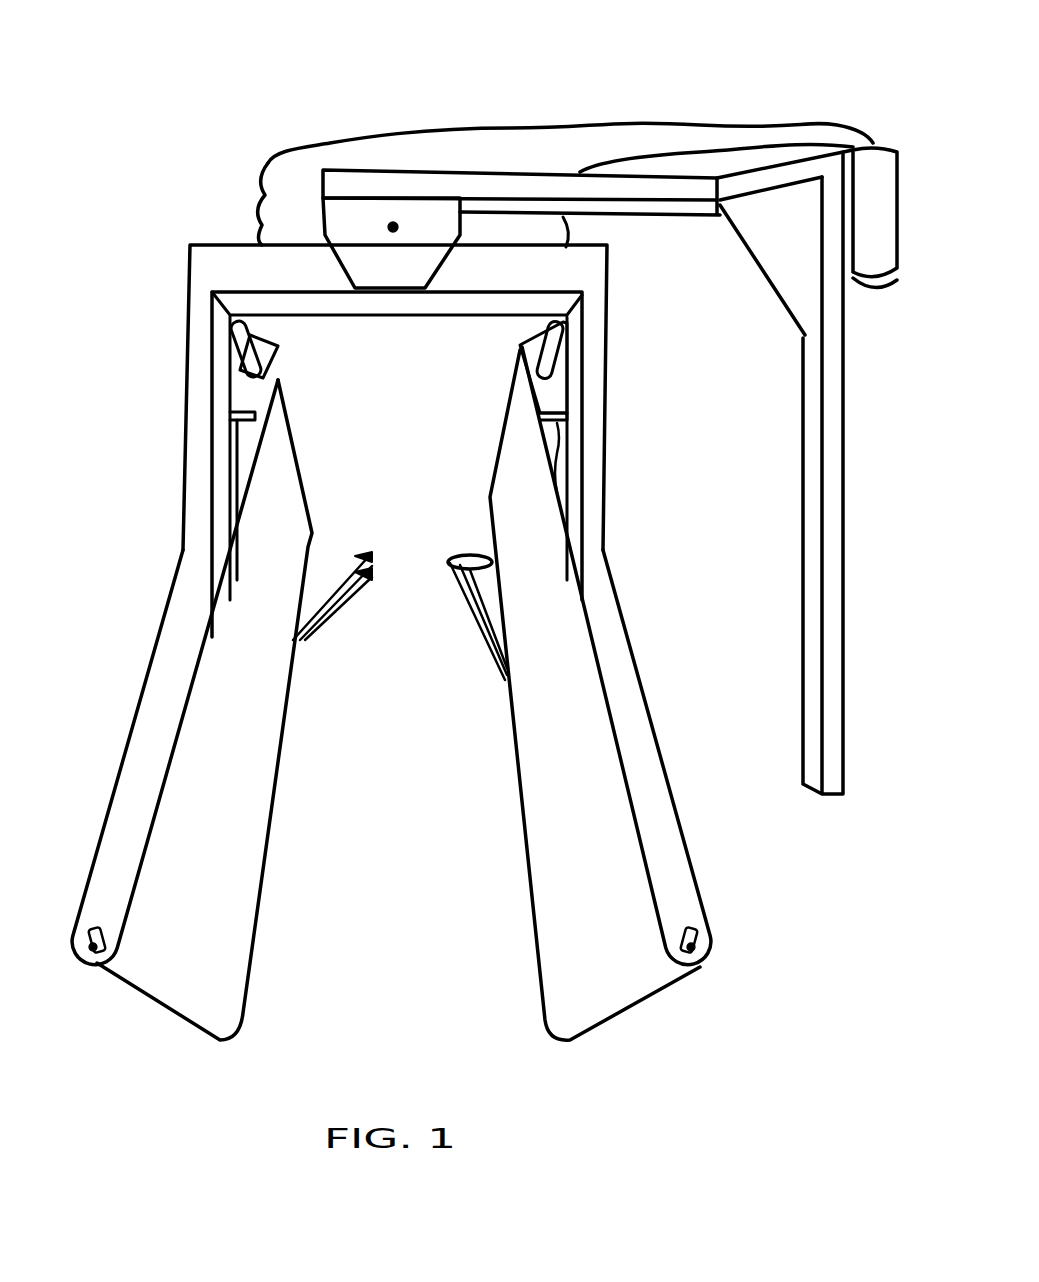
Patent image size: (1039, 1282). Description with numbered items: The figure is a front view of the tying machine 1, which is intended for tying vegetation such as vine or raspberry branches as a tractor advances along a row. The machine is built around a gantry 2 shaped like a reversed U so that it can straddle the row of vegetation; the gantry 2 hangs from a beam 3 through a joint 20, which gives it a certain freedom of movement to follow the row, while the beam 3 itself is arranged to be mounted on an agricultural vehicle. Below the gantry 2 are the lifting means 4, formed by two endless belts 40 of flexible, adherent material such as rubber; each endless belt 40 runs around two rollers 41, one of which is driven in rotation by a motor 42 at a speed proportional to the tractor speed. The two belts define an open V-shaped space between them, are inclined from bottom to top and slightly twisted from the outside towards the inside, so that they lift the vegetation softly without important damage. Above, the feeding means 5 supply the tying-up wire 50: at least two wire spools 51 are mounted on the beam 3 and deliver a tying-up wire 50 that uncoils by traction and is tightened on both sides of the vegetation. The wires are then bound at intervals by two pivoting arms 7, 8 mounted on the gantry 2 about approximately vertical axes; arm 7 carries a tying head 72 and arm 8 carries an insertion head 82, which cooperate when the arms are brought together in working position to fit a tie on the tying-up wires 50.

The tying machine 1 is at (156, 180).
The gantry 2 is at (190, 292).
The beam 3 is at (809, 436).
The lifting means 4 is at (146, 600).
The feeding means 5 is at (687, 104).
The pivoting arm 7 is at (487, 607).
The pivoting arm 8 is at (327, 597).
The joint 20 is at (393, 227).
The endless belt 40 is at (230, 825).
The roller 41 is at (95, 958).
The motor 42 is at (240, 363).
The tying-up wire 50 is at (440, 107).
The wire spool 51 is at (878, 150).
The tying head 72 is at (472, 563).
The insertion head 82 is at (342, 548).